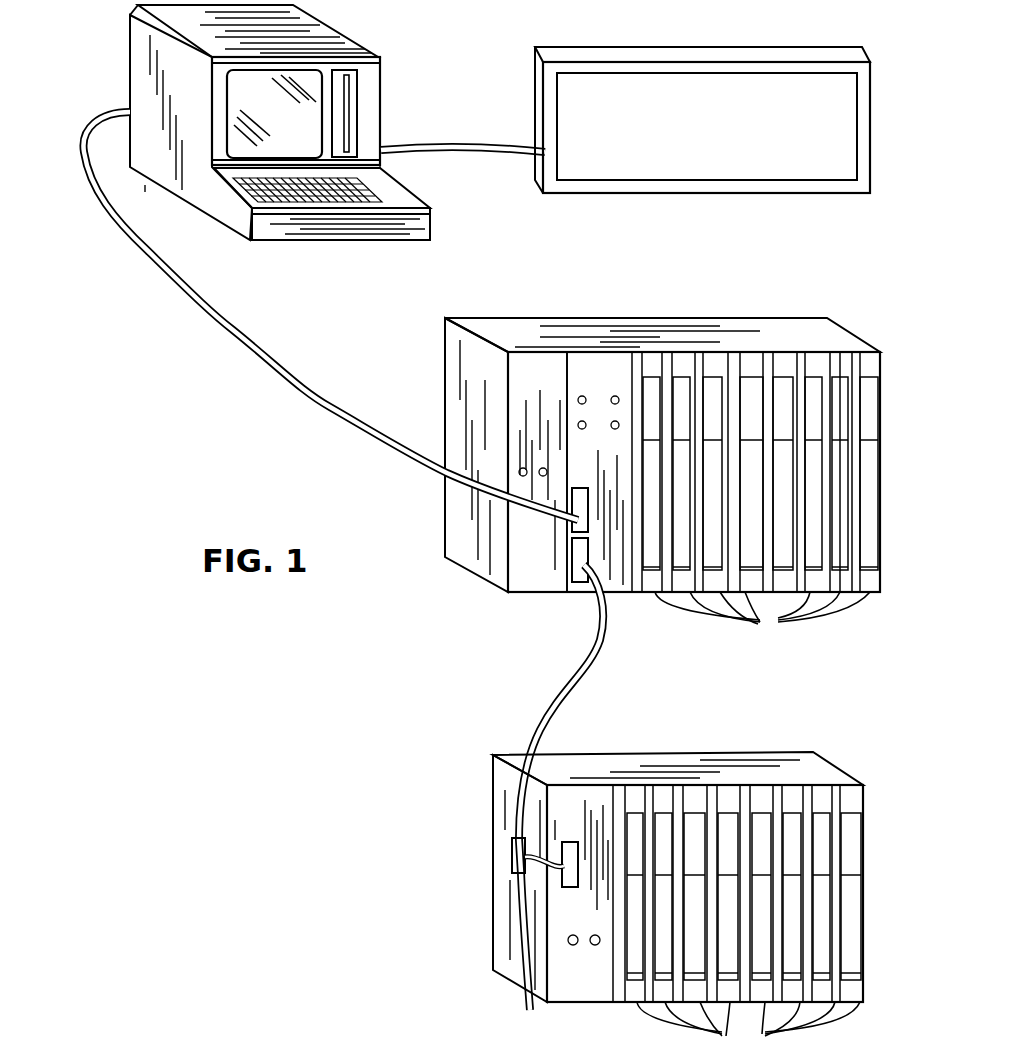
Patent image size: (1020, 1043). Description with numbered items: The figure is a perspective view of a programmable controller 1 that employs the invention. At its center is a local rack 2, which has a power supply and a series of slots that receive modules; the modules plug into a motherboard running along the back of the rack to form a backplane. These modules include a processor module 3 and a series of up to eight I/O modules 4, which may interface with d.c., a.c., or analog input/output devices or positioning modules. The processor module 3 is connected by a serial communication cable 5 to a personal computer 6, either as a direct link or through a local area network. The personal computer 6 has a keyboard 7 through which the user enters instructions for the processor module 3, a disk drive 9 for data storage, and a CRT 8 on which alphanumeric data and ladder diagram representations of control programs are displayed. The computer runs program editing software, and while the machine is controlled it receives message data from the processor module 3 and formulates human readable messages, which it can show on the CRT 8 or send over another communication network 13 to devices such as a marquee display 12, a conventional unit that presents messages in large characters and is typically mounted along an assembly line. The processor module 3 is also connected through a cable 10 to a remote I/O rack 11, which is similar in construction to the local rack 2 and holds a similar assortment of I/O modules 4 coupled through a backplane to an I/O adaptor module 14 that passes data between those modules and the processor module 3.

The programmable controller 1 is at (366, 472).
The local rack 2 is at (662, 444).
The processor module 3 is at (607, 384).
The I/O modules 4 is at (748, 1022).
The serial communication cable 5 is at (335, 408).
The personal computer 6 is at (284, 137).
The keyboard 7 is at (360, 207).
The CRT 8 is at (284, 124).
The disk drive 9 is at (348, 87).
The cable 10 is at (575, 676).
The remote I/O rack 11 is at (678, 876).
The marquee display 12 is at (613, 194).
The communication network 13 is at (494, 160).
The I/O adaptor module 14 is at (576, 814).